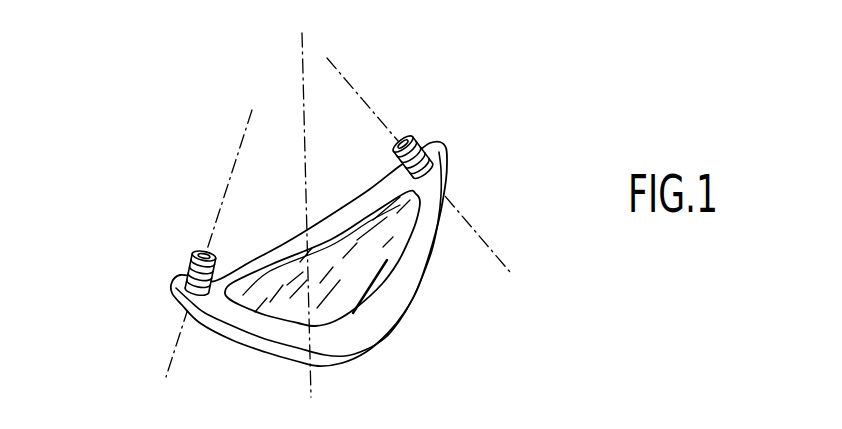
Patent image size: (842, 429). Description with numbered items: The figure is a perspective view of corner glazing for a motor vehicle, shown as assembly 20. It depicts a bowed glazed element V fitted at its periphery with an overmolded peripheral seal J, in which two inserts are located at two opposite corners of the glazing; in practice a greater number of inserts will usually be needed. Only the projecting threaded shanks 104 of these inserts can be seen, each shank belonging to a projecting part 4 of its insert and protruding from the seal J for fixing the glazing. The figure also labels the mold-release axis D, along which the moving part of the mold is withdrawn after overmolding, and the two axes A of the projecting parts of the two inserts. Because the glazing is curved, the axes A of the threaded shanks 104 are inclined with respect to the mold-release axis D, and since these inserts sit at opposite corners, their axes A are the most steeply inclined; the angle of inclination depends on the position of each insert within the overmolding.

The lens holder assembly 20 is at (151, 183).
The projecting part 4 is at (196, 254).
The threaded shanks 104 is at (406, 137).
The glazed element V is at (363, 237).
The overmolded peripheral seal J is at (397, 288).
The axes of the projecting parts A is at (175, 350).
The mold-release axis D is at (312, 373).